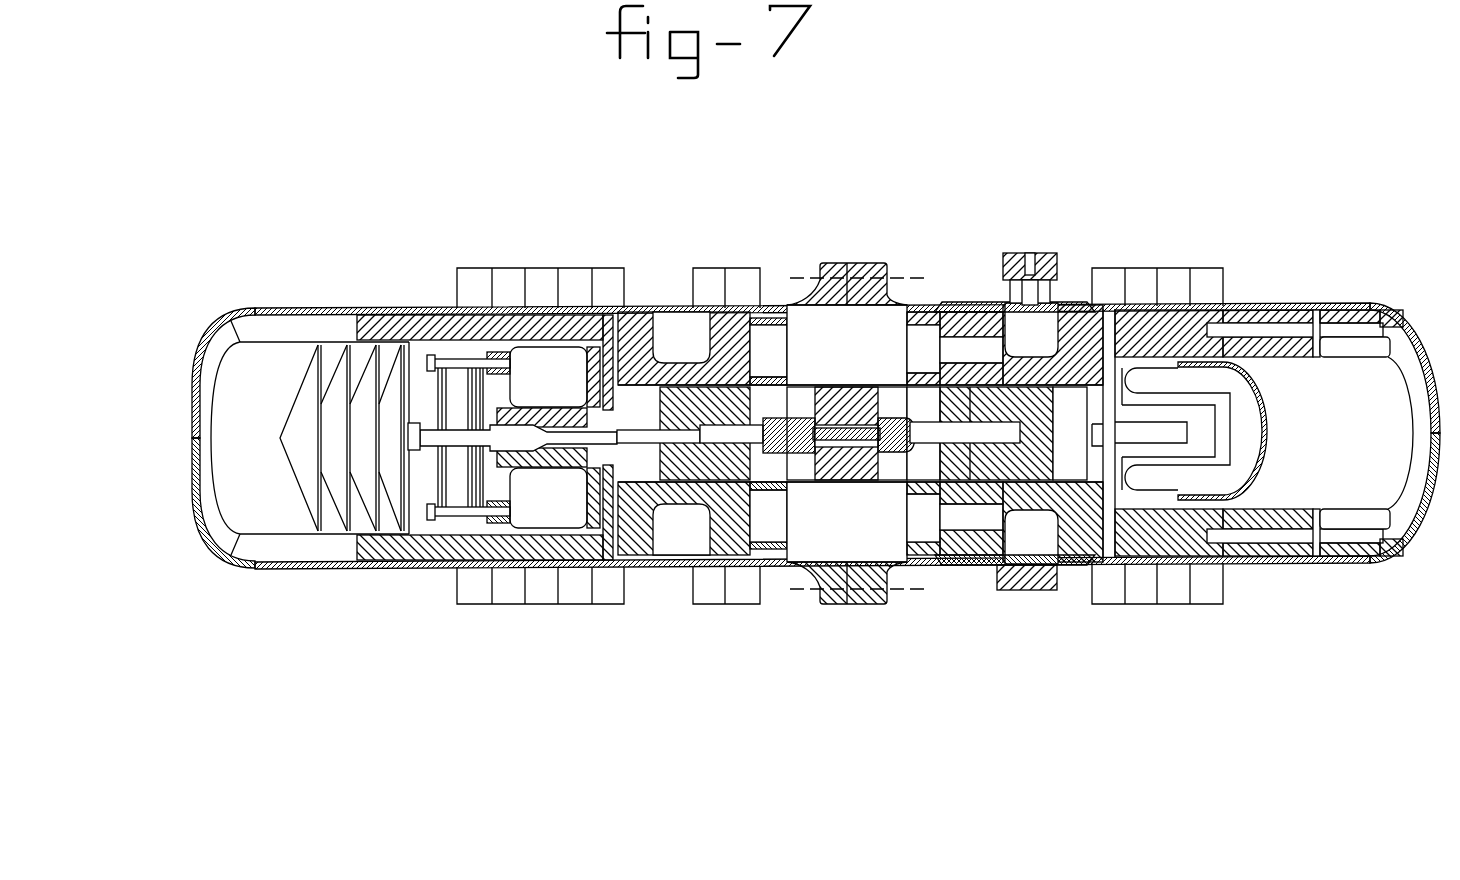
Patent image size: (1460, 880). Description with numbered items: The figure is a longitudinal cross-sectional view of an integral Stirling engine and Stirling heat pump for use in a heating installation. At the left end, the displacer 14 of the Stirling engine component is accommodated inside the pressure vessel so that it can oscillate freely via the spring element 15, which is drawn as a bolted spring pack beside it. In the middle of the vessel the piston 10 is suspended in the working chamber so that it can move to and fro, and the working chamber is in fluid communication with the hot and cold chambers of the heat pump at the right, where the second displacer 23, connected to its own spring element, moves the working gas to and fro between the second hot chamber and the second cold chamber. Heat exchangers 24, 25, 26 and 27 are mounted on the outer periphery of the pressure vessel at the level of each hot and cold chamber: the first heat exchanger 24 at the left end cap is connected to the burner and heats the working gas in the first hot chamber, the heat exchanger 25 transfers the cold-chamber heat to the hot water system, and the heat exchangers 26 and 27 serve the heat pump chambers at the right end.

The piston 10 is at (676, 413).
The displacer 14 is at (297, 458).
The spring element 15 is at (446, 352).
The second displacer 23 is at (1267, 432).
The first heat exchanger 24 is at (216, 345).
The heat exchanger 25 is at (575, 590).
The heat exchanger 26 is at (1165, 590).
The heat exchanger 27 is at (1380, 299).